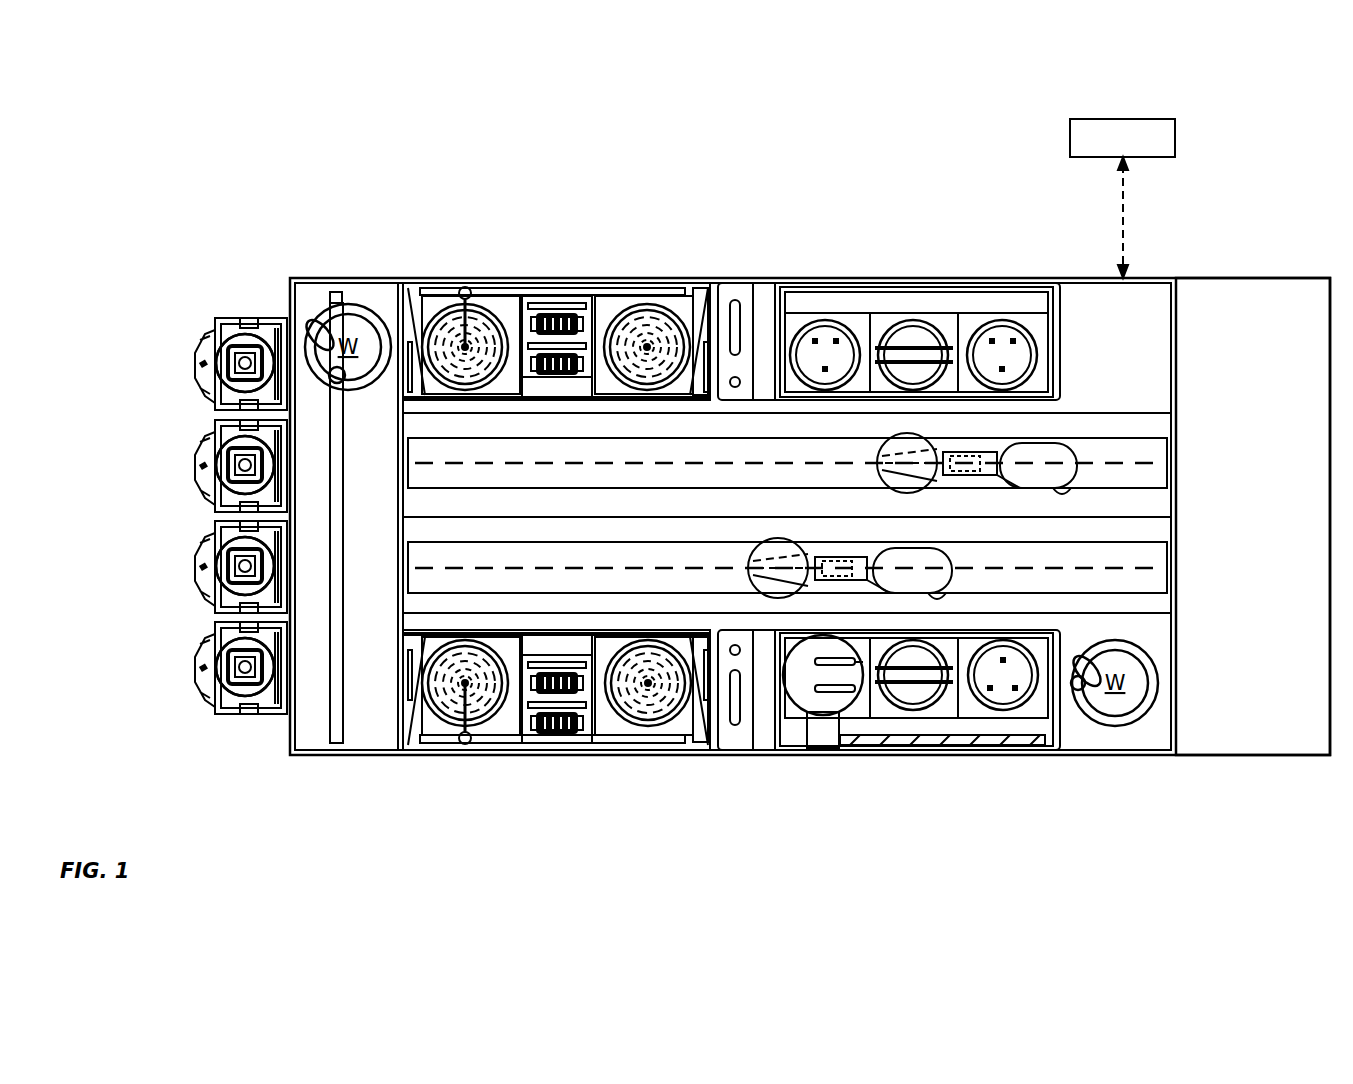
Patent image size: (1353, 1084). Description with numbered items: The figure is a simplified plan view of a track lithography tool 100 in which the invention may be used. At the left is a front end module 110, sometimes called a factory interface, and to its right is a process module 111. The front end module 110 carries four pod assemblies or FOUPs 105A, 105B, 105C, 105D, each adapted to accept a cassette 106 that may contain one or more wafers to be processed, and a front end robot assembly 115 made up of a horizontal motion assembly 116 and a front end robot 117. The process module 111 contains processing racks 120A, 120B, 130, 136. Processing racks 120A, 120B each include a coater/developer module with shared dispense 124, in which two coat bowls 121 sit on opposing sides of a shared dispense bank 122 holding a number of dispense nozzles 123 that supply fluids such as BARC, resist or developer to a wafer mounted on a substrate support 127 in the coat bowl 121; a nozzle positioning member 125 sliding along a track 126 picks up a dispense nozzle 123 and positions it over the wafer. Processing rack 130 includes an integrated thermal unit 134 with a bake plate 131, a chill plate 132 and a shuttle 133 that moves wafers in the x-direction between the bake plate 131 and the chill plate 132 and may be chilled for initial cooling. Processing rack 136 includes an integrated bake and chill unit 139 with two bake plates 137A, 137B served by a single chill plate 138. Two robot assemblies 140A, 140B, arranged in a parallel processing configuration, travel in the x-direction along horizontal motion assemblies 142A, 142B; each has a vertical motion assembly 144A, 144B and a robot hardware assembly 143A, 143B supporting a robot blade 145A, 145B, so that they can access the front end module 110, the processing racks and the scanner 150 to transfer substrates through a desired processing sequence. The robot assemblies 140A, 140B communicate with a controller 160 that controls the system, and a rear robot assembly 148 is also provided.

The processing system 100 is at (810, 426).
The pod assembly 105A is at (200, 345).
The pod assembly 105B is at (200, 447).
The pod assembly 105C is at (200, 548).
The pod assembly 105D is at (200, 649).
The cassette 106 is at (200, 372).
The front end module 110 is at (298, 778).
The process module 111 is at (709, 830).
The front end robot assembly 115 is at (312, 296).
The horizontal motion assembly 116 is at (330, 725).
The front end robot 117 is at (383, 290).
The processing rack 120A is at (569, 240).
The processing rack 120B is at (517, 818).
The coat bowl 121 is at (468, 400).
The shared dispense bank 122 is at (560, 418).
The dispense nozzle 123 is at (512, 296).
The coater/developer module with shared dispense 124 is at (693, 288).
The nozzle positioning member 125 is at (452, 730).
The track 126 is at (553, 750).
The substrate support 127 is at (440, 305).
The processing rack 130 is at (904, 792).
The bake plate 131 is at (1035, 750).
The chill plate 132 is at (935, 746).
The shuttle 133 is at (790, 750).
The integrated thermal unit 134 is at (1048, 750).
The processing rack 136 is at (904, 240).
The bake plate 137A is at (796, 325).
The bake plate 137B is at (1030, 325).
The chill plate 138 is at (943, 330).
The integrated bake and chill unit 139 is at (1060, 295).
The robot assembly 140A is at (1070, 488).
The robot assembly 140B is at (950, 593).
The horizontal motion assembly 142A is at (1150, 438).
The horizontal motion assembly 142B is at (1150, 592).
The robot hardware assembly 143A is at (992, 443).
The robot hardware assembly 143B is at (868, 540).
The vertical motion assembly 144A is at (1072, 452).
The vertical motion assembly 144B is at (952, 560).
The robot blade 145A is at (880, 470).
The robot blade 145B is at (750, 573).
The rear robot assembly 148 is at (1133, 750).
The scanner 150 is at (1295, 278).
The controller 160 is at (1158, 119).